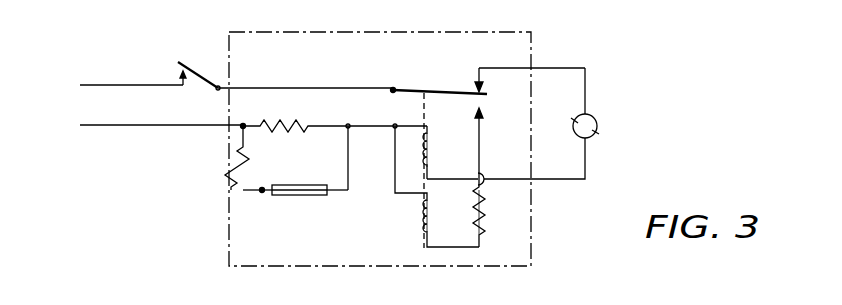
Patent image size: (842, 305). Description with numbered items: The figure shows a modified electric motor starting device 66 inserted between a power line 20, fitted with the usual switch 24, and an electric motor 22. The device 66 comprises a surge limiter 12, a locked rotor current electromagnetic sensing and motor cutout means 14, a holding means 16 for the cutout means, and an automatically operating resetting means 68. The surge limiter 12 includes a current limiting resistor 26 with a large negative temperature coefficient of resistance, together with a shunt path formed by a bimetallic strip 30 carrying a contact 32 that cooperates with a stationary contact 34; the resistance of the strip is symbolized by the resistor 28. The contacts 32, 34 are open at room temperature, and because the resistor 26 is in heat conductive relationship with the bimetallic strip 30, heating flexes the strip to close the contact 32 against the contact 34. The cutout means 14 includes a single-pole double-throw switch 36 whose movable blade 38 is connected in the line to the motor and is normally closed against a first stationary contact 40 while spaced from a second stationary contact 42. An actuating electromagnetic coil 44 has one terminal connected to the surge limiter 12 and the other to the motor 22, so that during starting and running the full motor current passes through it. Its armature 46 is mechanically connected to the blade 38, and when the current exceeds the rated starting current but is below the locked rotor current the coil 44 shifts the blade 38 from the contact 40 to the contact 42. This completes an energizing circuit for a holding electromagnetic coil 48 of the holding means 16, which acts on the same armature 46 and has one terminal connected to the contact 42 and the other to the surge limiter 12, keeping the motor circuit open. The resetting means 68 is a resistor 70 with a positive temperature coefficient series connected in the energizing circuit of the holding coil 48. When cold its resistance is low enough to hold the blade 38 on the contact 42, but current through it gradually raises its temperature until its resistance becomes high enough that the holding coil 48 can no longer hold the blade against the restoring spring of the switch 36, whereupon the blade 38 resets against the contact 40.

The surge limiter 12 is at (238, 190).
The locked rotor current electromagnetic sensing and motor cutout means 14 is at (420, 160).
The holding means 16 is at (416, 232).
The power line 20 is at (120, 106).
The electric motor 22 is at (598, 121).
The switch 24 is at (201, 70).
The current limiting resistor 26 is at (334, 113).
The resistor 28 is at (237, 158).
The bimetallic strip 30 is at (294, 197).
The contact 32 is at (346, 194).
The stationary contact 34 is at (345, 181).
The single-pole double-throw switch 36 is at (468, 80).
The movable blade 38 is at (408, 88).
The first stationary contact 40 is at (486, 88).
The second stationary contact 42 is at (486, 118).
The actuating electromagnetic coil 44 is at (432, 158).
The armature 46 is at (424, 110).
The holding electromagnetic coil 48 is at (420, 212).
The starting device 66 is at (227, 264).
The resetting means 68 is at (488, 218).
The resistor 70 is at (475, 211).